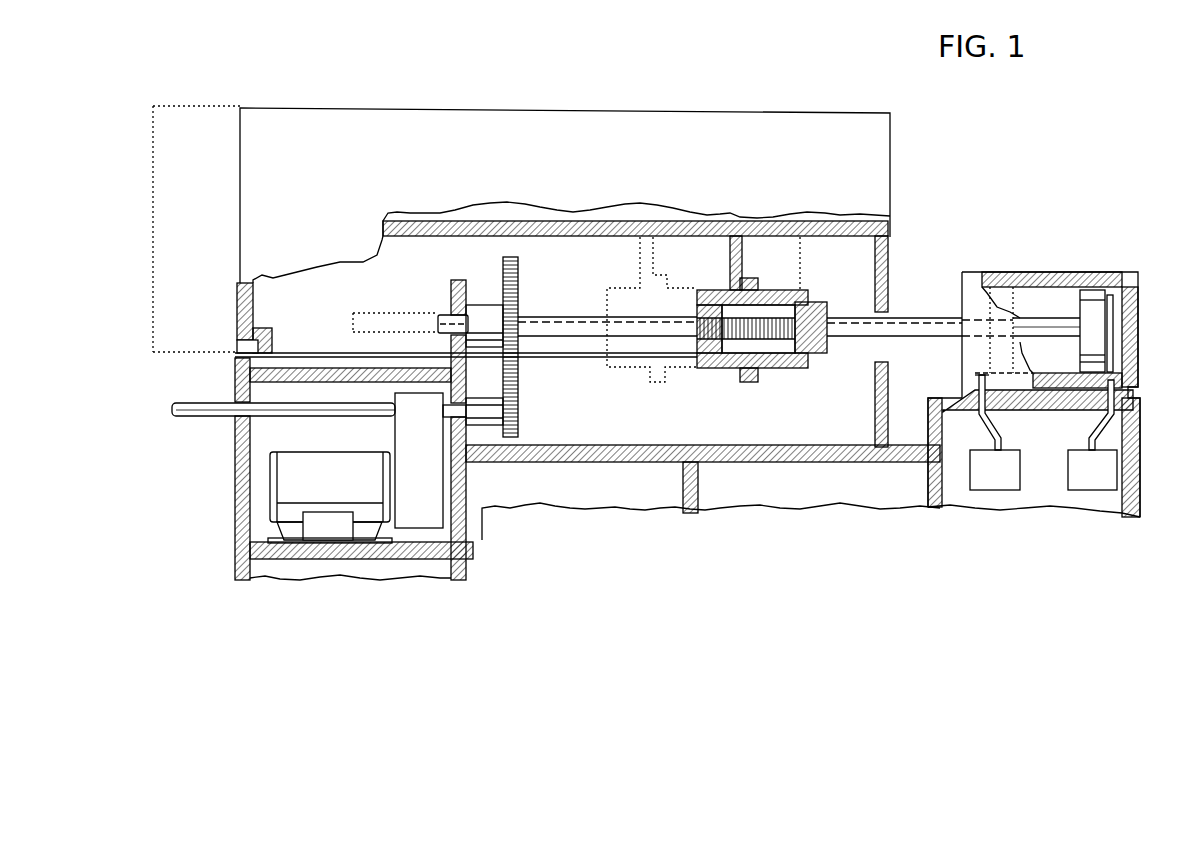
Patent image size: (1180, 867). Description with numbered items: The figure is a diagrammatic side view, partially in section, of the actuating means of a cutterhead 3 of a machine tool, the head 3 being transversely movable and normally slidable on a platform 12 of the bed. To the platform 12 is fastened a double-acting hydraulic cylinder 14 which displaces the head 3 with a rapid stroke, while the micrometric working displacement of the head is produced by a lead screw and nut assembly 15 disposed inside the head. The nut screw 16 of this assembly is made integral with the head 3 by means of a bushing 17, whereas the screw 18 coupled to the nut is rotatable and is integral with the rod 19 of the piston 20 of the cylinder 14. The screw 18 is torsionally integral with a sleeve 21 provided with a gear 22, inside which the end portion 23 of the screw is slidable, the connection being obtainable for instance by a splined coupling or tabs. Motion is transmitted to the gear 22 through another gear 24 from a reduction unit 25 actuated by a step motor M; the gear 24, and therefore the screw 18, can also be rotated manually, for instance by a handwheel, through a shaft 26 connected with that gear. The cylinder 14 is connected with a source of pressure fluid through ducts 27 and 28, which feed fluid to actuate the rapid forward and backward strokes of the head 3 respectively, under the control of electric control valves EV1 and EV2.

The cutterhead 3 is at (565, 96).
The platform 12 is at (603, 490).
The double-acting hydraulic cylinder 14 is at (1016, 266).
The lead screw and nut assembly 15 is at (689, 344).
The nut screw 16 is at (703, 368).
The bushing 17 is at (778, 290).
The screw 18 is at (765, 342).
The rod 19 is at (1045, 325).
The piston 20 is at (1090, 300).
The sleeve 21 is at (483, 303).
The gear 22 is at (518, 277).
The end portion 23 is at (540, 330).
The gear 24 is at (518, 420).
The reduction unit 25 is at (427, 489).
The shaft 26 is at (322, 414).
The duct 27 is at (1088, 428).
The duct 28 is at (1001, 432).
The step motor M is at (292, 478).
The electric control valve EV1 is at (1088, 480).
The electric control valve EV2 is at (995, 477).